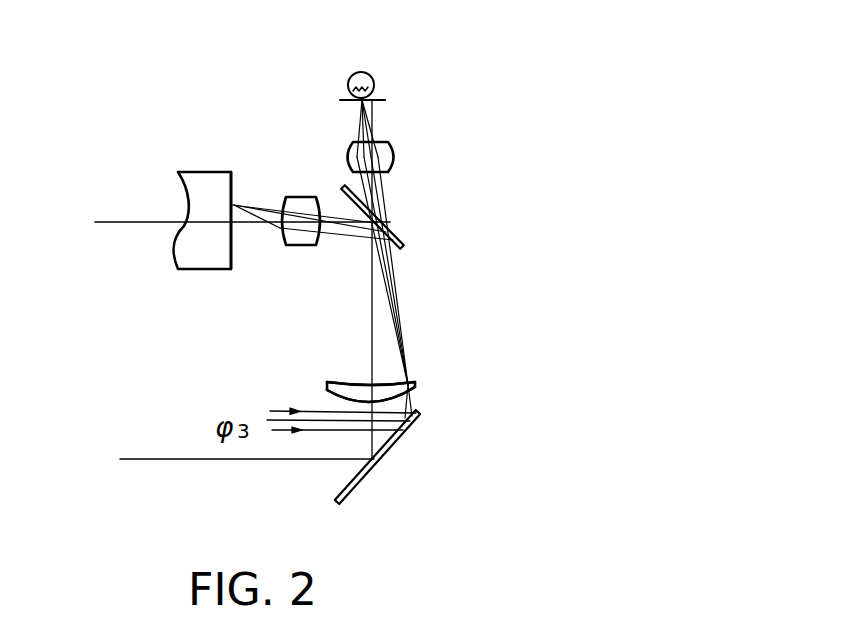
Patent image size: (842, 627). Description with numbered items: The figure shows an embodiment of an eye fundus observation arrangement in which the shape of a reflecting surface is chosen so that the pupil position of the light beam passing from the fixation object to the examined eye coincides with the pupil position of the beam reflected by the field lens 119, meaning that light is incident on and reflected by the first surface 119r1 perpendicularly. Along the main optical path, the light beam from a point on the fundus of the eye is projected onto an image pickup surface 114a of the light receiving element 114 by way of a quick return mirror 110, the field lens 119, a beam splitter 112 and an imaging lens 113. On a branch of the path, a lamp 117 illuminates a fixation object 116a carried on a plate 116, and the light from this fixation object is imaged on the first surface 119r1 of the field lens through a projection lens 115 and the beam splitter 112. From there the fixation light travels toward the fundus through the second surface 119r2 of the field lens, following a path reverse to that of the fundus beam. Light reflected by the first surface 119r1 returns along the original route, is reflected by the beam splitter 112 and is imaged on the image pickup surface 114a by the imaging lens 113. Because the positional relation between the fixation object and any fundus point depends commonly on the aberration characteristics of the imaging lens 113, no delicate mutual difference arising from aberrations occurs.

The quick return mirror 110 is at (350, 492).
The beam splitter 112 is at (405, 243).
The imaging lens 113 is at (300, 197).
The light receiving element / detector 114 is at (203, 172).
The image pickup surface 114a is at (232, 255).
The projection lens 115 is at (398, 157).
The aperture plate 116 is at (386, 99).
The fixation object 116a is at (357, 103).
The lamp 117 is at (371, 77).
The field lens 119 is at (416, 382).
The first surface of the field lens 119r1 is at (328, 382).
The second surface of the field lens 119r2 is at (333, 397).